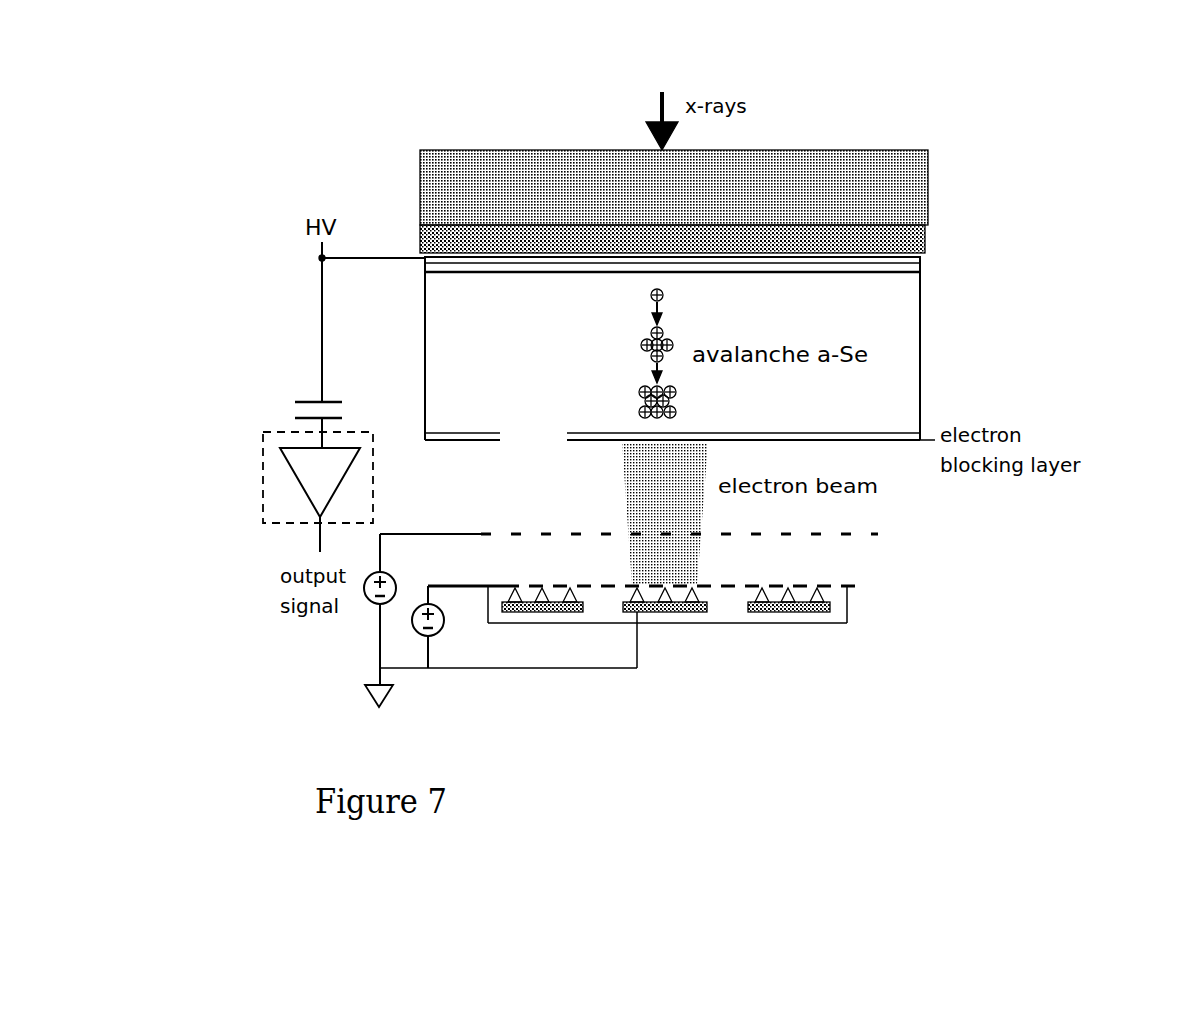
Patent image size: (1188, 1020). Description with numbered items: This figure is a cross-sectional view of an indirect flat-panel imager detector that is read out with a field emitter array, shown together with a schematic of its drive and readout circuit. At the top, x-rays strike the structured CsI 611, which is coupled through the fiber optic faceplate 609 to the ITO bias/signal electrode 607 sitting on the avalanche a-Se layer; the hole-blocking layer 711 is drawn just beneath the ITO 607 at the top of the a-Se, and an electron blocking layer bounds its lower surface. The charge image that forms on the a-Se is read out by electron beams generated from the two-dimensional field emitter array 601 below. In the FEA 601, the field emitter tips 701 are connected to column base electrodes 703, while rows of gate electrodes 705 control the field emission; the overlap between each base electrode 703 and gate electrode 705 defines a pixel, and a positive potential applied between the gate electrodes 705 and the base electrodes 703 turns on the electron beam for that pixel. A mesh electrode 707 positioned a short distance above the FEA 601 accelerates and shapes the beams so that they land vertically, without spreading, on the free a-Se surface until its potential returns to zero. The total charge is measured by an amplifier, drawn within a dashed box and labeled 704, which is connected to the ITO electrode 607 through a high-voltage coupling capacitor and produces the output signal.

The CsI 611 is at (940, 172).
The fiber optic faceplate 609 is at (925, 243).
The bias/signal electrode 607 is at (925, 249).
The hole-blocking layer 711 is at (920, 272).
The mesh electrode 707 is at (767, 534).
The gate electrode 705 is at (780, 585).
The base electrode 703 is at (817, 612).
The field emitter tips 701 is at (763, 600).
The field emitter array 601 is at (780, 677).
The amplifier 704 is at (258, 477).